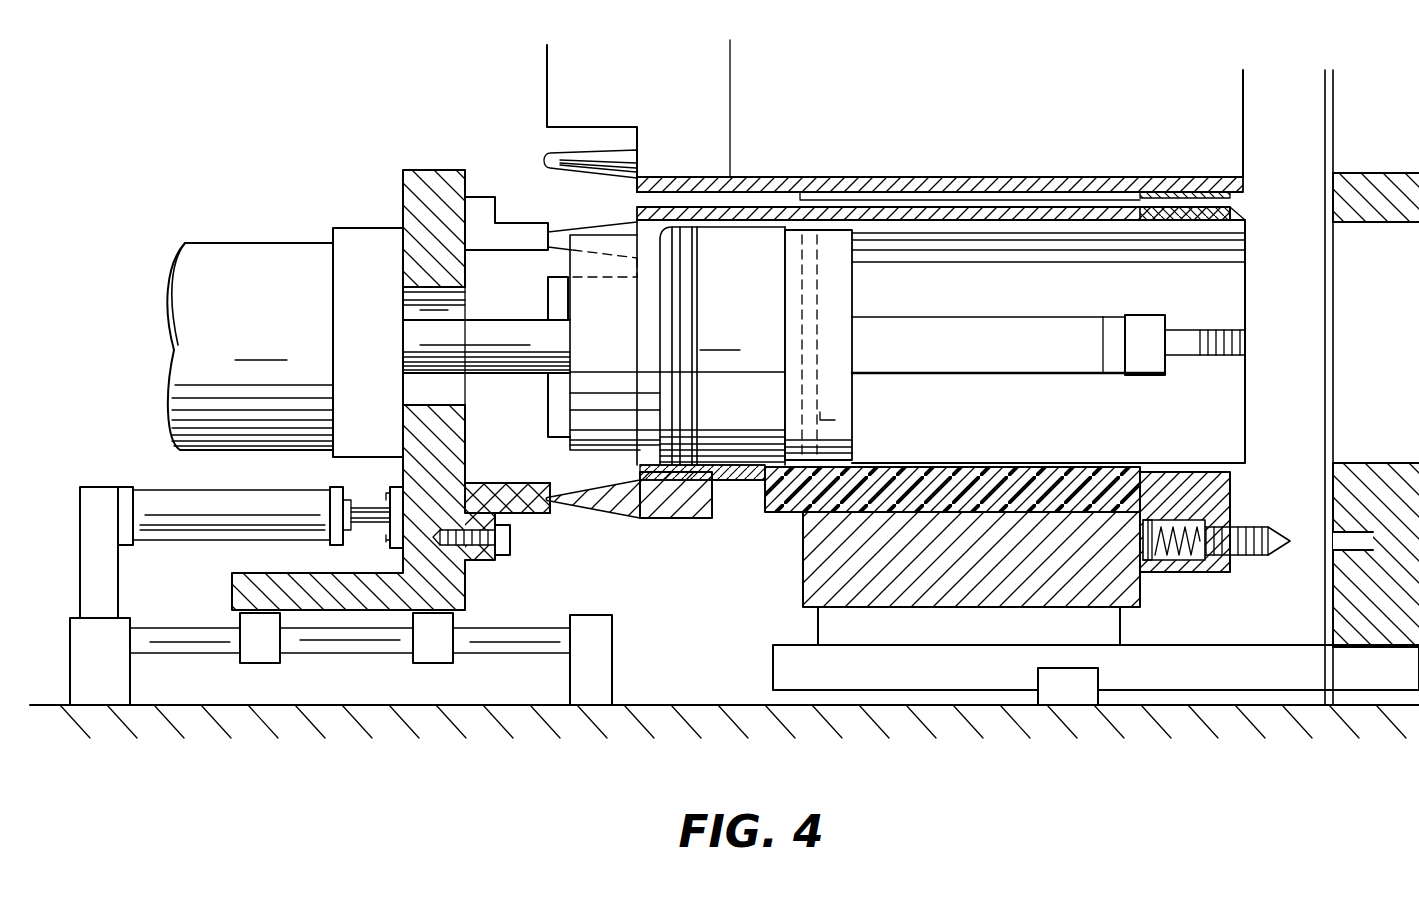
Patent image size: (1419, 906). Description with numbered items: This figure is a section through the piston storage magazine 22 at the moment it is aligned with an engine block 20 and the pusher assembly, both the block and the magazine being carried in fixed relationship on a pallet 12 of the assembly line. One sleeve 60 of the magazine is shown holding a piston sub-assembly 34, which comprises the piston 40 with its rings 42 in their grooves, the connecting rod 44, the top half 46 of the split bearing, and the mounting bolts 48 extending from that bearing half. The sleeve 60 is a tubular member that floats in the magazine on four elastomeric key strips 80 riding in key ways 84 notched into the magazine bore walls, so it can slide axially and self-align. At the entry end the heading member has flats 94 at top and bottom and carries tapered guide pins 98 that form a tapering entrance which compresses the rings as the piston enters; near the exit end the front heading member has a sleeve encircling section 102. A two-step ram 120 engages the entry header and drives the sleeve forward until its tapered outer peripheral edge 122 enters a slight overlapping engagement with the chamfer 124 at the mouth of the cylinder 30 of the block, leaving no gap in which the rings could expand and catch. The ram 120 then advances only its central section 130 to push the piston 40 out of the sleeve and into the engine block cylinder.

The pallet 12 is at (1220, 665).
The engine block 20 is at (1328, 140).
The piston storage magazine 22 is at (1160, 138).
The cylinder 30 is at (1382, 462).
The piston sub-assembly 34 is at (858, 414).
The piston 40 is at (848, 298).
The rings 42 is at (703, 250).
The connecting rod 44 is at (1000, 365).
The top half of split bearing 46 is at (1147, 372).
The mounting bolts 48 is at (1190, 355).
The sleeve 60 is at (1040, 235).
The key strips 80 is at (752, 505).
The key ways 84 is at (790, 520).
The flats 94 is at (548, 290).
The tapered guide pins 98 is at (602, 518).
The sleeve encircling section 102 is at (1195, 572).
The two-step ram 120 is at (252, 250).
The tapered outer peripheral edge 122 is at (1240, 215).
The chamfer 124 is at (1328, 227).
The central section 130 is at (580, 414).